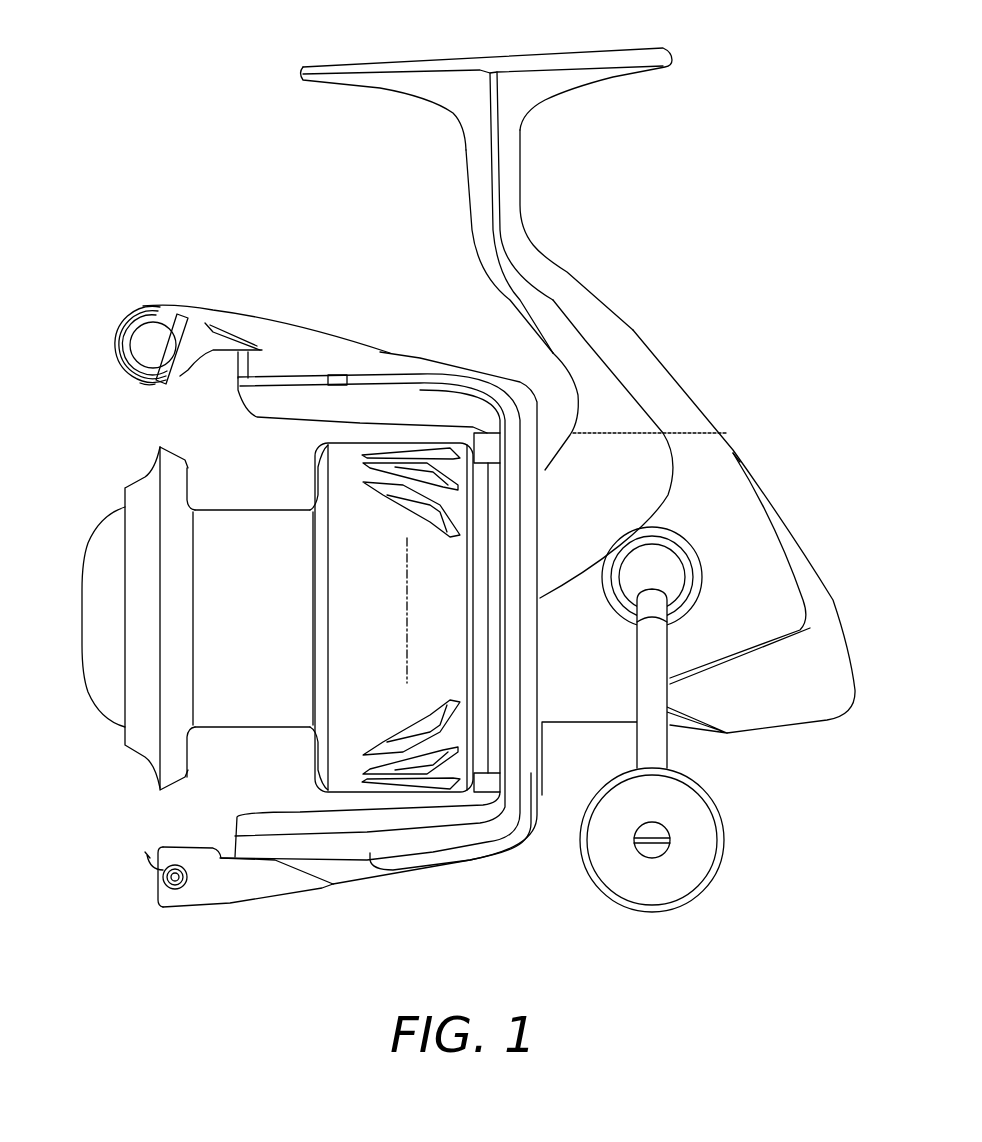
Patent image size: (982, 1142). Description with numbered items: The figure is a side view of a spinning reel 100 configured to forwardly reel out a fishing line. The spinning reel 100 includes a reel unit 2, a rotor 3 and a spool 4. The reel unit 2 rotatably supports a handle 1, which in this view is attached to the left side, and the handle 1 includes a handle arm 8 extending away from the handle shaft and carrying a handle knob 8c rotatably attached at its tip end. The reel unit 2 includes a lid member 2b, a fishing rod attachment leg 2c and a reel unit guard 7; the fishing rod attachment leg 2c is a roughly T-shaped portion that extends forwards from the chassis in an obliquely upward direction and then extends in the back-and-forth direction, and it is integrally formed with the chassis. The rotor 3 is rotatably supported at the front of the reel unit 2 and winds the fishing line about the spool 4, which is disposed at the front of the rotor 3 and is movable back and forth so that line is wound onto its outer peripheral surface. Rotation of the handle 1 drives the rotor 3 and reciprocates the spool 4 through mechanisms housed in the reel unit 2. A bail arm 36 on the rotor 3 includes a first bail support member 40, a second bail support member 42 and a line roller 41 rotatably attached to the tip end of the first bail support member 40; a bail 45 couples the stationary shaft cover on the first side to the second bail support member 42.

The spinning reel 100 is at (260, 181).
The handle 1 is at (675, 762).
The reel unit 2 is at (642, 320).
The lid member 2b is at (640, 467).
The fishing rod attachment leg 2c is at (567, 278).
The rotor 3 is at (390, 353).
The spool 4 is at (242, 506).
The reel unit guard 7 is at (780, 497).
The handle arm 8 is at (652, 740).
The handle knob 8c is at (627, 877).
The bail arm 36 is at (124, 394).
The first bail support member 40 is at (258, 315).
The line roller 41 is at (138, 307).
The second bail support member 42 is at (235, 893).
The bail 45 is at (165, 386).